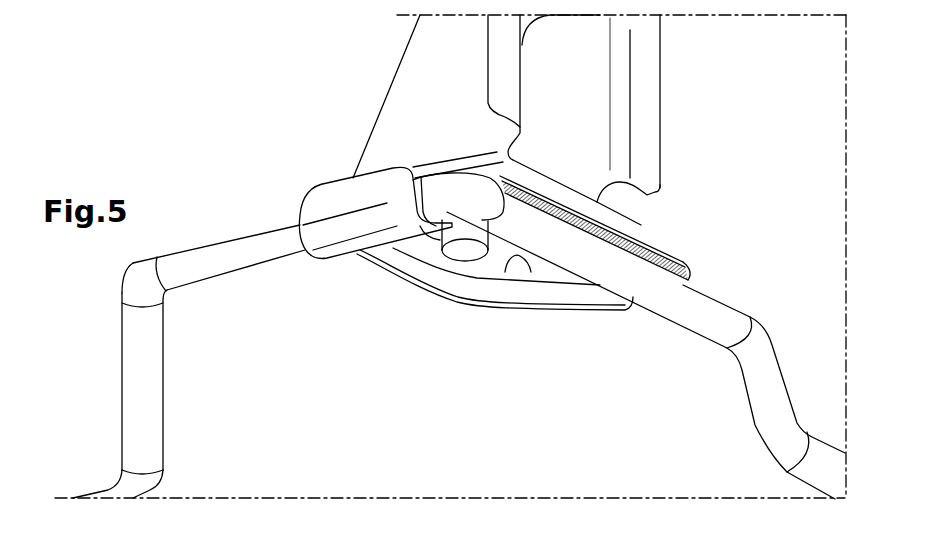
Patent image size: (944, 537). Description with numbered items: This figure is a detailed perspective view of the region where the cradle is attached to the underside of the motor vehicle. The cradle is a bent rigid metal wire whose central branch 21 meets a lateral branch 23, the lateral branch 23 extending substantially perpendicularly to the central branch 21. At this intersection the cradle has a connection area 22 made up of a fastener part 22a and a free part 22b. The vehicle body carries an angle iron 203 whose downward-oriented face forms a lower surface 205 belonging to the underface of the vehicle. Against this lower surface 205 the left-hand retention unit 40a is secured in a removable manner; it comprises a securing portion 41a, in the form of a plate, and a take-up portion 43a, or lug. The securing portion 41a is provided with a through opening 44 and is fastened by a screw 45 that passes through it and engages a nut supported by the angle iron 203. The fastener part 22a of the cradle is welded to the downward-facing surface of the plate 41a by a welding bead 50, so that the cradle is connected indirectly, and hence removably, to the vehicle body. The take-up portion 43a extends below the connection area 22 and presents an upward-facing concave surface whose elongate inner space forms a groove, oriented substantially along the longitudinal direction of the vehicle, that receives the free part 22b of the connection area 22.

The central branch 21 is at (748, 418).
The connection area 22 is at (357, 82).
The fastener part 22a is at (503, 195).
The free part 22b is at (210, 258).
The lateral branch 23 is at (155, 407).
The left-hand retention unit 40a is at (495, 309).
The securing portion 41a is at (570, 300).
The take-up portion 43a is at (327, 181).
The through opening 44 is at (513, 268).
The screw 45 is at (481, 263).
The welding bead 50 is at (684, 281).
The angle iron 203 is at (590, 115).
The lower surface 205 is at (641, 225).